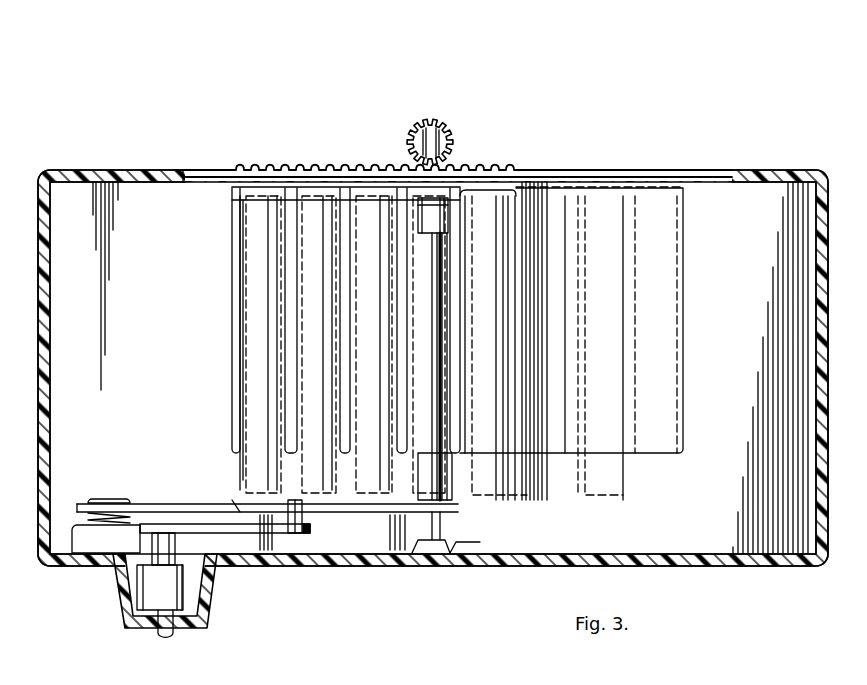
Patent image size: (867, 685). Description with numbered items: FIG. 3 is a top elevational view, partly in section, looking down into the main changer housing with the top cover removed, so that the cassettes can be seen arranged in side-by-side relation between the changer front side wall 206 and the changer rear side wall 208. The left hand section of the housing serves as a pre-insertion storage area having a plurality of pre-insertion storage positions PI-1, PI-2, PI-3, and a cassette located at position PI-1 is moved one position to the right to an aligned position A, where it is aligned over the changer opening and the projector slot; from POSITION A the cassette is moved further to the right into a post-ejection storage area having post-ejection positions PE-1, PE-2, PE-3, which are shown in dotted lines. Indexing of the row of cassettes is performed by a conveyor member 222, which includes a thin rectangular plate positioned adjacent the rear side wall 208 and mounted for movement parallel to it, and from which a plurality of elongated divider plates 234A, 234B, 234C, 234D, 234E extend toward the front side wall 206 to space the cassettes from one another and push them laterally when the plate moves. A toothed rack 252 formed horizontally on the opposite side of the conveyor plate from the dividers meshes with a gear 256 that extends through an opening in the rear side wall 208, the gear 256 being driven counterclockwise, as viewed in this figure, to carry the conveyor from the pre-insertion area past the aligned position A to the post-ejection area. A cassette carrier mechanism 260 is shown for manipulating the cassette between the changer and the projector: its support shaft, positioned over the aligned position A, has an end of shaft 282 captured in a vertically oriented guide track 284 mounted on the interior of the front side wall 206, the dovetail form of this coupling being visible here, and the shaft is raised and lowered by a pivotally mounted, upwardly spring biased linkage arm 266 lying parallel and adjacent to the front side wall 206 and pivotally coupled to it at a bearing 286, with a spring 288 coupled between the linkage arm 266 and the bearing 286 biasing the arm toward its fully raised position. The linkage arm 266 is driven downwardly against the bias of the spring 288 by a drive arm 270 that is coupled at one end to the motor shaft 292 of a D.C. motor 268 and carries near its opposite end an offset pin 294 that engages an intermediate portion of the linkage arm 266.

The changer front side wall 206 is at (497, 566).
The changer rear side wall 208 is at (92, 178).
The conveyor member 222 is at (226, 207).
The divider plate 234A is at (453, 338).
The divider plate 234B is at (403, 263).
The divider plate 234C is at (352, 268).
The divider plate 234D is at (292, 290).
The divider plate 234E is at (238, 312).
The toothed rack 252 is at (475, 165).
The gear 256 is at (452, 135).
The cassette carrier mechanism 260 is at (302, 544).
The linkage arm 266 is at (240, 504).
The D.C. motor 268 is at (145, 595).
The drive arm 270 is at (257, 530).
The end of shaft 282 is at (430, 544).
The guide track 284 is at (455, 548).
The bearing 286 is at (93, 542).
The spring 288 is at (77, 503).
The motor shaft 292 is at (170, 545).
The offset pin 294 is at (307, 517).
The pre-insertion storage position PI-1 is at (375, 210).
The pre-insertion storage position PI-2 is at (322, 210).
The pre-insertion storage position PI-3 is at (262, 210).
The post-ejection position PE-1 is at (487, 236).
The post-ejection position PE-2 is at (556, 246).
The post-ejection position PE-3 is at (604, 242).
The aligned position POSITION A is at (411, 186).